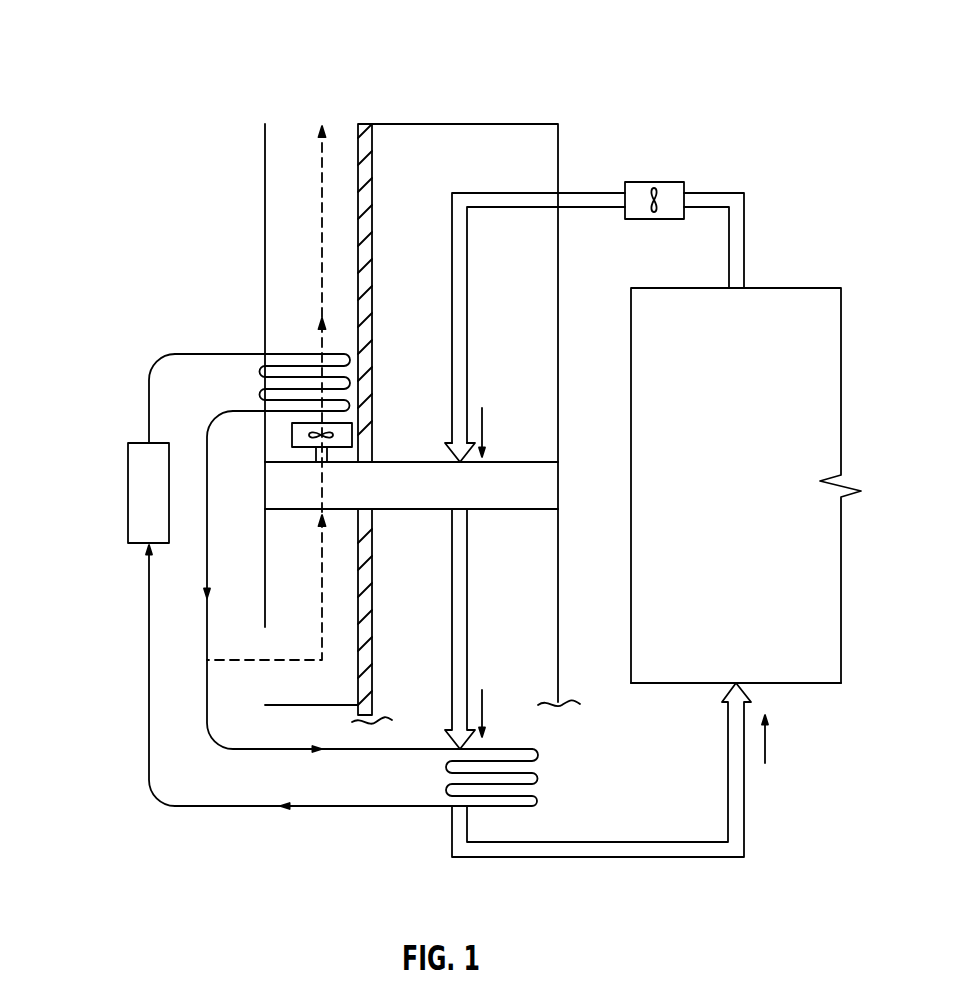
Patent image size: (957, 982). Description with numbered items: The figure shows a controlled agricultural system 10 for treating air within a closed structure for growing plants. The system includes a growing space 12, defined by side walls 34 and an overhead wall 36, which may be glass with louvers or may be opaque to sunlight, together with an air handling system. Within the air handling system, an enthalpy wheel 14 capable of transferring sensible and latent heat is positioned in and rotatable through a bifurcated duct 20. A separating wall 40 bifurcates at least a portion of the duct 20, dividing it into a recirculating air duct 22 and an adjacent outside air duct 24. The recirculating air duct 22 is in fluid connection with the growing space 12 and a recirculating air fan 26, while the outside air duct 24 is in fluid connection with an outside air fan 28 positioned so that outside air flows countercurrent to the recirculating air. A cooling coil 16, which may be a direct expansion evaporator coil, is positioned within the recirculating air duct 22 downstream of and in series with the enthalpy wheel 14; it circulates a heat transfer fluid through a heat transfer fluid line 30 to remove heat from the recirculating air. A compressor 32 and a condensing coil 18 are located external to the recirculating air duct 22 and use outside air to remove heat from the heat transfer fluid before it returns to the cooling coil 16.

The controlled agricultural system 10 is at (722, 47).
The growing space 12 is at (770, 288).
The enthalpy wheel 14 is at (560, 488).
The cooling coil 16 is at (532, 752).
The condensing coil 18 is at (293, 412).
The bifurcated duct 20 is at (265, 178).
The recirculating air duct 22 is at (543, 162).
The outside air duct 24 is at (290, 613).
The recirculating air fan 26 is at (673, 182).
The outside air fan 28 is at (292, 438).
The heat transfer fluid line 30 is at (190, 806).
The compressor 32 is at (128, 492).
The side walls 34 is at (797, 683).
The overhead wall 36 is at (680, 668).
The separating wall 40 is at (372, 190).